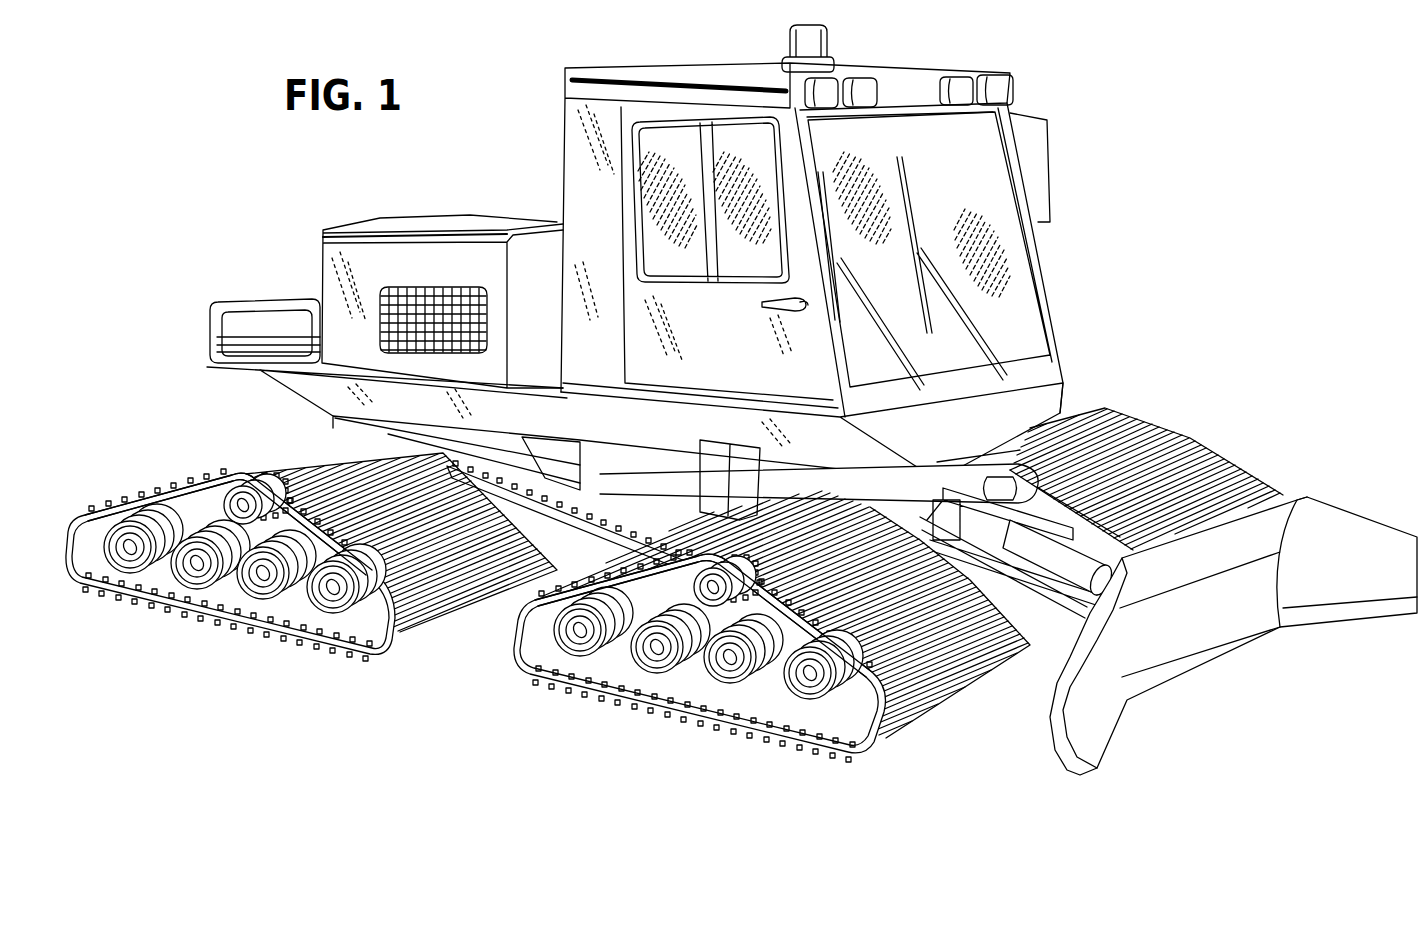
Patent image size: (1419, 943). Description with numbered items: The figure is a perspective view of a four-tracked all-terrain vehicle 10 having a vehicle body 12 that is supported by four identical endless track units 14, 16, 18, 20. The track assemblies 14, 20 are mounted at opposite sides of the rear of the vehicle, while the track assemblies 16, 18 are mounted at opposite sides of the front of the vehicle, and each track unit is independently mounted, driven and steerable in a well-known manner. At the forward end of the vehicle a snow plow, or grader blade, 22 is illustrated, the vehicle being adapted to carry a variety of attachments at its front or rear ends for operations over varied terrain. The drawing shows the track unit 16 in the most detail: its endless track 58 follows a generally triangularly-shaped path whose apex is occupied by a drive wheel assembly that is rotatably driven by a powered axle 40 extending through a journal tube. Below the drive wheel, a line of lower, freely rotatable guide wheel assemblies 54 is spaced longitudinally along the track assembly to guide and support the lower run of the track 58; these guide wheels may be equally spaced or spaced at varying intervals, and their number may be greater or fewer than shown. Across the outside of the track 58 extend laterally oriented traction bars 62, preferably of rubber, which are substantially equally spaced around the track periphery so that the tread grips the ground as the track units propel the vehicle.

The four-tracked all-terrain vehicle 10 is at (1100, 118).
The vehicle body 12 is at (1052, 270).
The endless track unit 14 is at (296, 637).
The endless track unit 16 is at (810, 750).
The endless track unit 18 is at (1172, 434).
The endless track unit 20 is at (572, 540).
The snow plow or grader blade 22 is at (1340, 528).
The powered axle 40 is at (690, 613).
The guide wheel assemblies 54 is at (566, 660).
The endless track 58 is at (893, 723).
The traction bars 62 is at (861, 723).